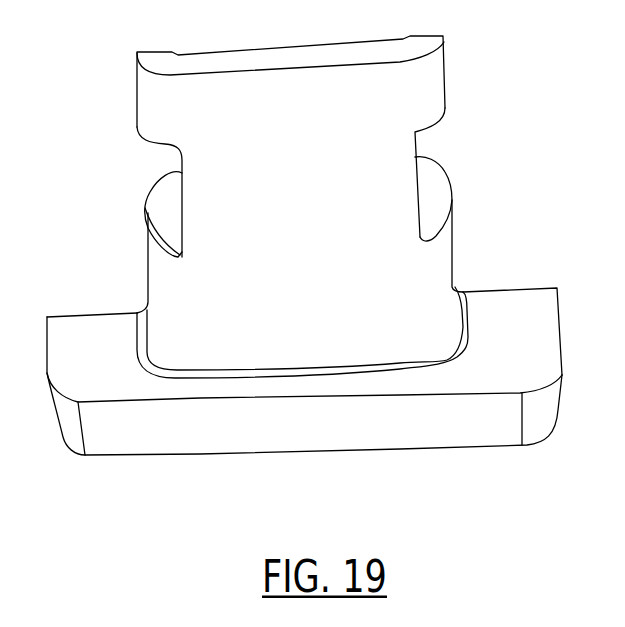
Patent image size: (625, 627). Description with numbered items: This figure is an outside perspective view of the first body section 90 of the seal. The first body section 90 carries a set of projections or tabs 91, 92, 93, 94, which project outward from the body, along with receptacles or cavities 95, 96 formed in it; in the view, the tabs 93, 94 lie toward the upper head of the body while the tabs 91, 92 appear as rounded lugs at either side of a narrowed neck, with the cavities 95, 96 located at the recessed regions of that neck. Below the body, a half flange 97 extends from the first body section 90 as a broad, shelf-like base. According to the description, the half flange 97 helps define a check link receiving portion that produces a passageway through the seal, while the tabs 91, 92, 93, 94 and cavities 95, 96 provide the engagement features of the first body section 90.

The first body section 90 is at (306, 282).
The projection or tab 91 is at (447, 170).
The projection or tab 92 is at (143, 201).
The projection or tab 93 is at (307, 81).
The projection or tab 94 is at (137, 95).
The receptacle or cavity 95 is at (415, 142).
The receptacle or cavity 96 is at (162, 158).
The half flange 97 is at (516, 297).